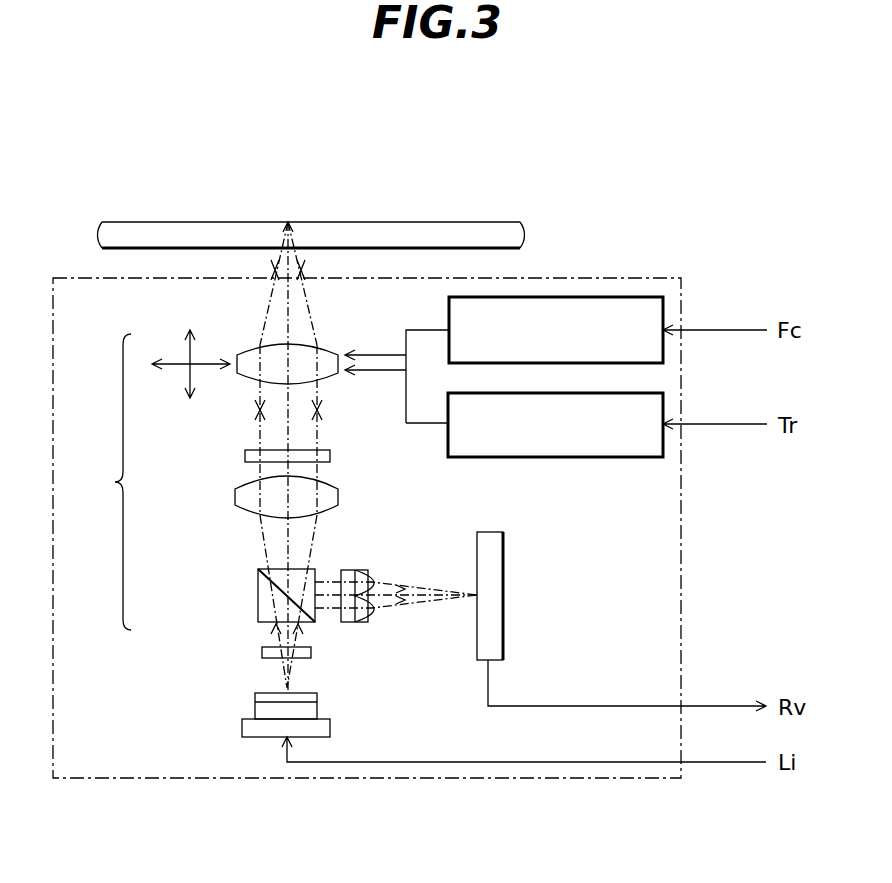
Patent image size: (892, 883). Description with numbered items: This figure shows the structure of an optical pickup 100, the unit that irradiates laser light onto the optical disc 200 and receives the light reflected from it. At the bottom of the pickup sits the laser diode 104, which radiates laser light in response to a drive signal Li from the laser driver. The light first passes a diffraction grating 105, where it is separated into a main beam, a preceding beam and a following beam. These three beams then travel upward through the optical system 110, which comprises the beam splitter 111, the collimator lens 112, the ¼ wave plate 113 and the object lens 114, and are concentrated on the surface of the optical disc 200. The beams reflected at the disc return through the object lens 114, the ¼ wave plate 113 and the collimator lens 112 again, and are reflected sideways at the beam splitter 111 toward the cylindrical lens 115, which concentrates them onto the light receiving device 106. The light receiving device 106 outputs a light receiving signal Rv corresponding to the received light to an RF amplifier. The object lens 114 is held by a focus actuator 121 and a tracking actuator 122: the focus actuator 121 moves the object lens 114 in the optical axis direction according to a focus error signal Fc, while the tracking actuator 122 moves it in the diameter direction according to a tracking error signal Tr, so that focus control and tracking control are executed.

The optical disc 100 is at (100, 278).
The laser diode 104 is at (255, 705).
The diffraction grating 105 is at (262, 652).
The light receiving device 106 is at (490, 532).
The optical system 110 is at (99, 482).
The beam splitter 111 is at (258, 600).
The collimator lens 112 is at (235, 497).
The ¼ wave plate 113 is at (245, 455).
The object lens 114 is at (330, 382).
The cylindrical lens 115 is at (350, 570).
The focus actuator 121 is at (622, 297).
The tracking actuator 122 is at (592, 457).
The optical disc 200 is at (512, 222).